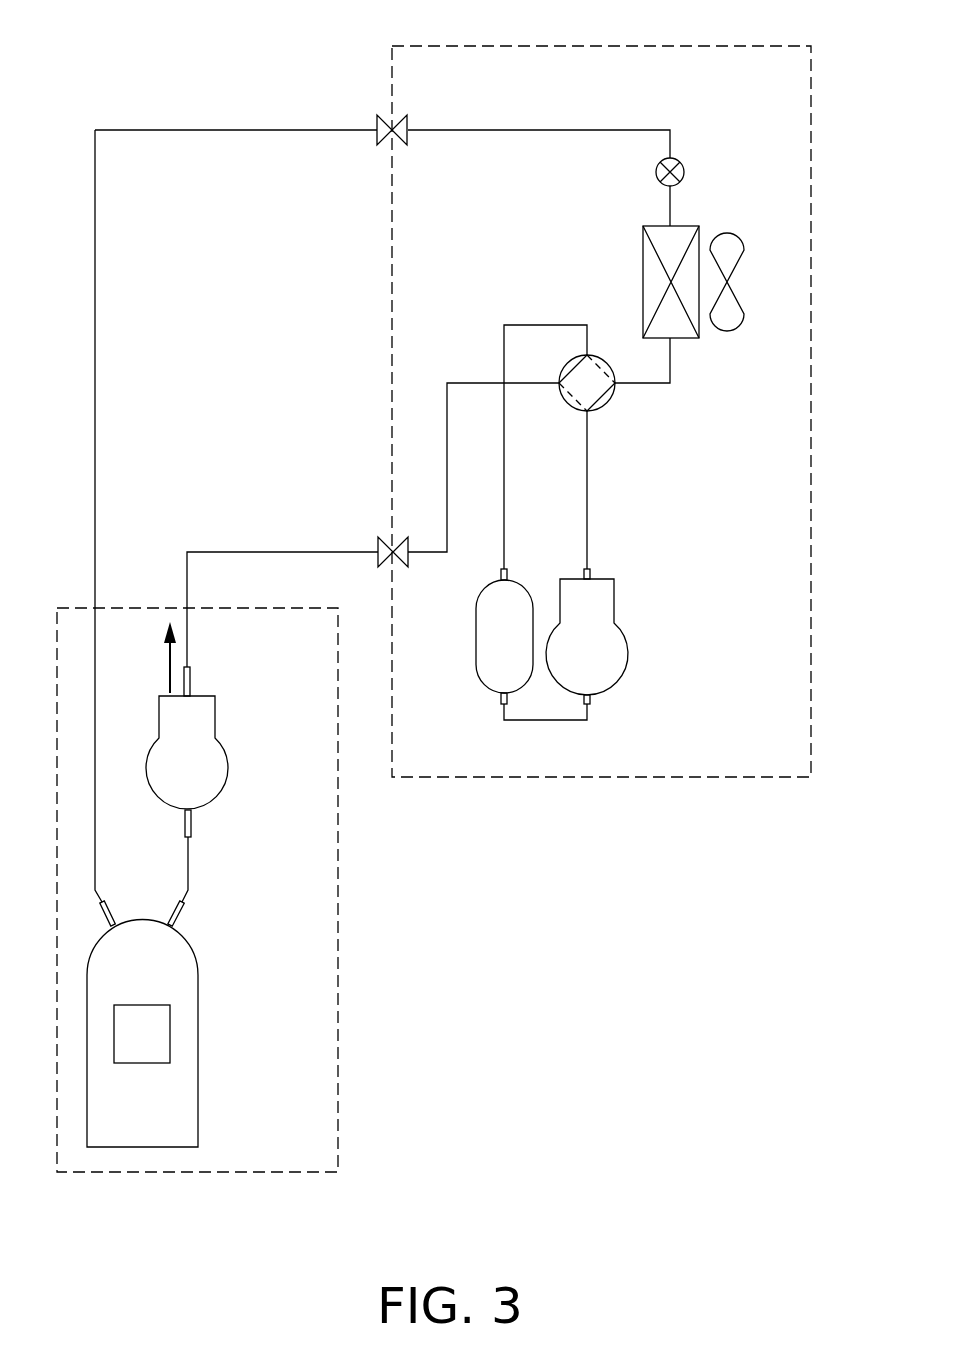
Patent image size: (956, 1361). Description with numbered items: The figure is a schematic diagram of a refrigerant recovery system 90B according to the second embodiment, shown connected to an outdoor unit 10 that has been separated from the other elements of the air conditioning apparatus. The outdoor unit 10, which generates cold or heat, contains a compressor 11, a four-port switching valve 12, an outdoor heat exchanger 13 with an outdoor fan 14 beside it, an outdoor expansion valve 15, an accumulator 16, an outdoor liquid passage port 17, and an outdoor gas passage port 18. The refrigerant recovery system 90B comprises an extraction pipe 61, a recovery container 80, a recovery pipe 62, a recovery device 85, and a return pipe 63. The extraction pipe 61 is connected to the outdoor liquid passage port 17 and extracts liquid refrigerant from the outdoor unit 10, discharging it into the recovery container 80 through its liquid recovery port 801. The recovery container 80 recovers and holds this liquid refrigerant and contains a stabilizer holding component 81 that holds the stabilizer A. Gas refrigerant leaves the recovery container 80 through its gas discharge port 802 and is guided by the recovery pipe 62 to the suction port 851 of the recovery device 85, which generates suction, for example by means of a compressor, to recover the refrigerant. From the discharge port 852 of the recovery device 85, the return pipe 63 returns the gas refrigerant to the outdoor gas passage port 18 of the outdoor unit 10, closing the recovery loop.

The outdoor unit 10 is at (447, 45).
The compressor 11 is at (630, 650).
The four-port switching valve 12 is at (567, 405).
The outdoor heat exchanger 13 is at (643, 281).
The outdoor fan 14 is at (745, 316).
The outdoor expansion valve 15 is at (684, 172).
The accumulator 16 is at (473, 637).
The outdoor liquid passage port 17 is at (388, 144).
The outdoor gas passage port 18 is at (390, 540).
The extraction pipe 61 is at (96, 398).
The recovery pipe 62 is at (190, 890).
The return pipe 63 is at (186, 568).
The recovery container 80 is at (199, 1117).
The liquid recovery port 801 is at (117, 910).
The gas discharge port 802 is at (188, 947).
The stabilizer holding component 81 is at (145, 1063).
The recovery device 85 is at (230, 768).
The suction port 851 is at (192, 686).
The discharge port 852 is at (193, 823).
The refrigerant recovery system 90B is at (338, 973).